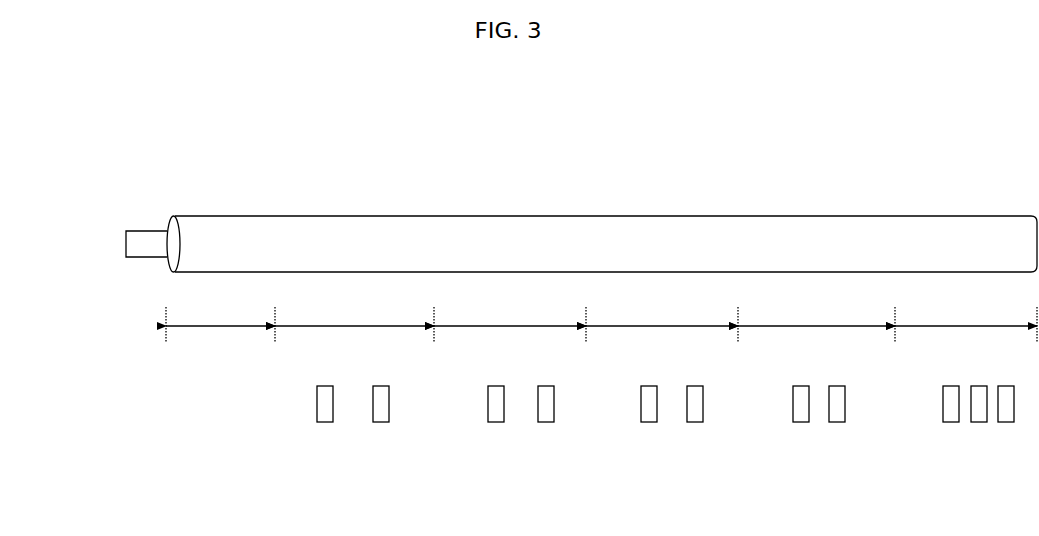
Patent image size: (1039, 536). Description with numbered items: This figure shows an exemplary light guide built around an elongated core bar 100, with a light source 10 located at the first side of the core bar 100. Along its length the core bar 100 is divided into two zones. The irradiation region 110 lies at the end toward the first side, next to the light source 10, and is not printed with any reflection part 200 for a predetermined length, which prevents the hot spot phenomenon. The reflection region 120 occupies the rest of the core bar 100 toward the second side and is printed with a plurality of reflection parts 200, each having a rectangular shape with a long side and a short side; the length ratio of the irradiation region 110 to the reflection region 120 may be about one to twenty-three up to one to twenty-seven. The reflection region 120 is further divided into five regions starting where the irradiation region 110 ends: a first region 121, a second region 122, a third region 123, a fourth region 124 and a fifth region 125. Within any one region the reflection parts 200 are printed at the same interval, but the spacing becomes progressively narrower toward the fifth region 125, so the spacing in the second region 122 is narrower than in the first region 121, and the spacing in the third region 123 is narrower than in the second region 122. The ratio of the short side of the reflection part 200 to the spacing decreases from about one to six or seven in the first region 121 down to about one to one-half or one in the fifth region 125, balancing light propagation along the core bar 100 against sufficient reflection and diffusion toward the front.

The light source 10 is at (132, 230).
The core bar 100 is at (233, 205).
The irradiation region 110 is at (220, 319).
The reflection region 120 is at (656, 395).
The first reflection region 121 is at (354, 319).
The second reflection region 122 is at (510, 319).
The third reflection region 123 is at (662, 319).
The fourth reflection region 124 is at (816, 319).
The fifth reflection region 125 is at (966, 319).
The reflection part 200 is at (317, 405).